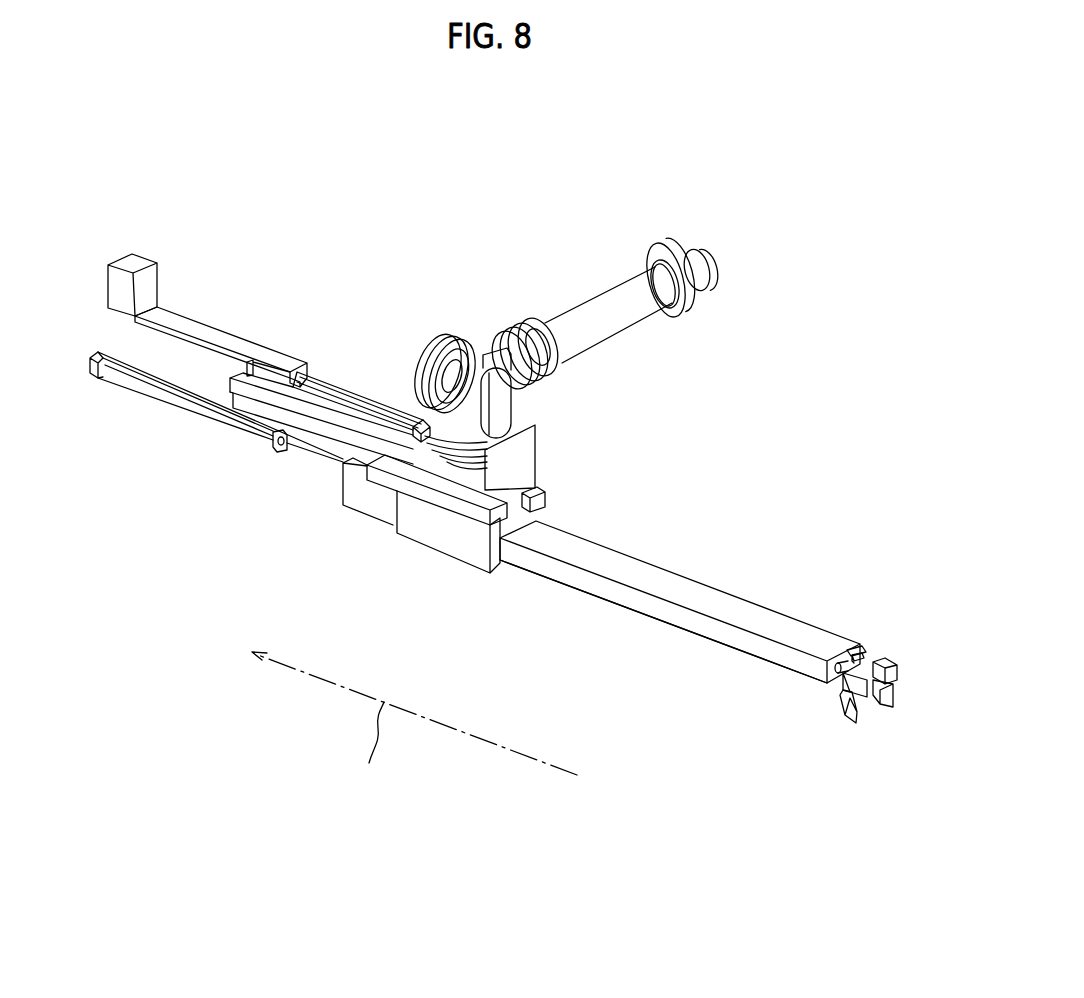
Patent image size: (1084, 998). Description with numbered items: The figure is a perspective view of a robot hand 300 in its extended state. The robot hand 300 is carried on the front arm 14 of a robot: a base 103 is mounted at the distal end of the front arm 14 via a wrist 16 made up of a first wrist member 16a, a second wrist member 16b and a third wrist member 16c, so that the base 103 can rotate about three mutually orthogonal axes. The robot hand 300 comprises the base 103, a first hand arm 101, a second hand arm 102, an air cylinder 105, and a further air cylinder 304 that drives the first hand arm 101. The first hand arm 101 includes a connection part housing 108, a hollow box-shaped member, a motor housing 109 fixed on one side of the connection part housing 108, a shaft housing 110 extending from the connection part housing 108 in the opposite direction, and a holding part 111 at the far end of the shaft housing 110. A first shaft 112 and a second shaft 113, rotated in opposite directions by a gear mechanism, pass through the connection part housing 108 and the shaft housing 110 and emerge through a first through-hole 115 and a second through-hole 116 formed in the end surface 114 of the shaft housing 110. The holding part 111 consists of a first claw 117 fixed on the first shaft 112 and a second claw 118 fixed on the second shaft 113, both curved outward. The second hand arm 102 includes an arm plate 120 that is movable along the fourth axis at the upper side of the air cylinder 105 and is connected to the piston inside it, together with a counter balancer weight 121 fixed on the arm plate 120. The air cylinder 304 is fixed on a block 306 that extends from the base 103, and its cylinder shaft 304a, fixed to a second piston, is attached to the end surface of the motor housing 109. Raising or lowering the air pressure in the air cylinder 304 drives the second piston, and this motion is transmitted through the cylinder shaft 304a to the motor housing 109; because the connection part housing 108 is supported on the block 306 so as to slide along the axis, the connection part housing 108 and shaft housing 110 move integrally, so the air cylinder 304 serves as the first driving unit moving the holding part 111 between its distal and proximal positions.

The robot hand 300 is at (327, 170).
The front arm 14 is at (608, 296).
The wrist 16 is at (553, 401).
The first wrist member 16a is at (550, 386).
The second wrist member 16b is at (472, 387).
The third wrist member 16c is at (502, 428).
The first hand arm 101 is at (630, 610).
The second hand arm 102 is at (262, 343).
The base 103 is at (347, 440).
The air cylinder 105 is at (369, 395).
The connection part housing 108 is at (430, 523).
The motor housing 109 is at (364, 497).
The shaft housing 110 is at (569, 573).
The holding part 111 is at (810, 679).
The first shaft 112 is at (867, 657).
The second shaft 113 is at (843, 682).
The end surface 114 is at (847, 650).
The first through-hole 115 is at (857, 657).
The second through-hole 116 is at (840, 664).
The first claw 117 is at (882, 707).
The second claw 118 is at (843, 713).
The arm plate 120 is at (208, 332).
The counter balancer weight 121 is at (134, 262).
The air cylinder 304 is at (188, 407).
The cylinder shaft 304a is at (283, 441).
The block 306 is at (231, 381).